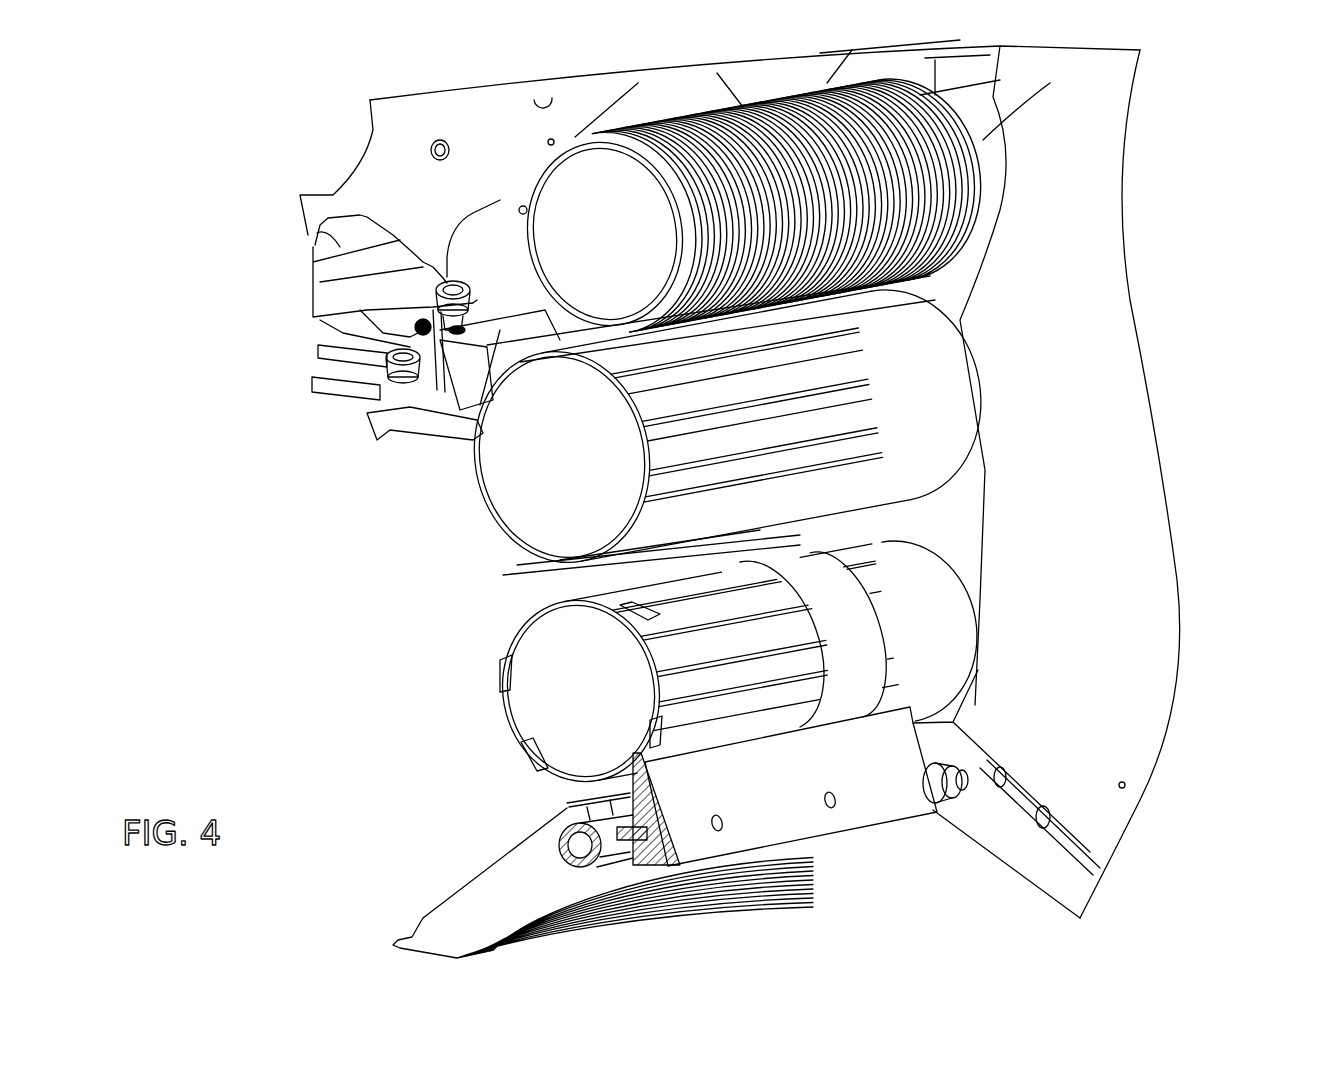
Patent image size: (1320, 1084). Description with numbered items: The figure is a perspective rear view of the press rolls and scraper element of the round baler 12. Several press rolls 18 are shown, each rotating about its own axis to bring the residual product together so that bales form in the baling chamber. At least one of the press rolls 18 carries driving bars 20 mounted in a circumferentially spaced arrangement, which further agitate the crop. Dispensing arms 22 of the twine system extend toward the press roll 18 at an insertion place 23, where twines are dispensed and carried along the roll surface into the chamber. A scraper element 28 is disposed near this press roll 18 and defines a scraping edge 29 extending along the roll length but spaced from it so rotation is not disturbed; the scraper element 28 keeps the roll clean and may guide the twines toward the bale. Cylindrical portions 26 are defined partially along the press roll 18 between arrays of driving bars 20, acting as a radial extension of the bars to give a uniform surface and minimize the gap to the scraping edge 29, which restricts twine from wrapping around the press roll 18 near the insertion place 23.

The round baler 12 is at (1163, 273).
The press rolls 18 is at (703, 660).
The driving bar 20 is at (668, 620).
The dispensing arms 22 is at (810, 527).
The insertion place 23 is at (760, 530).
The cylindrical portions 26 is at (853, 632).
The scraper element 28 is at (593, 752).
The scraping edge 29 is at (643, 767).